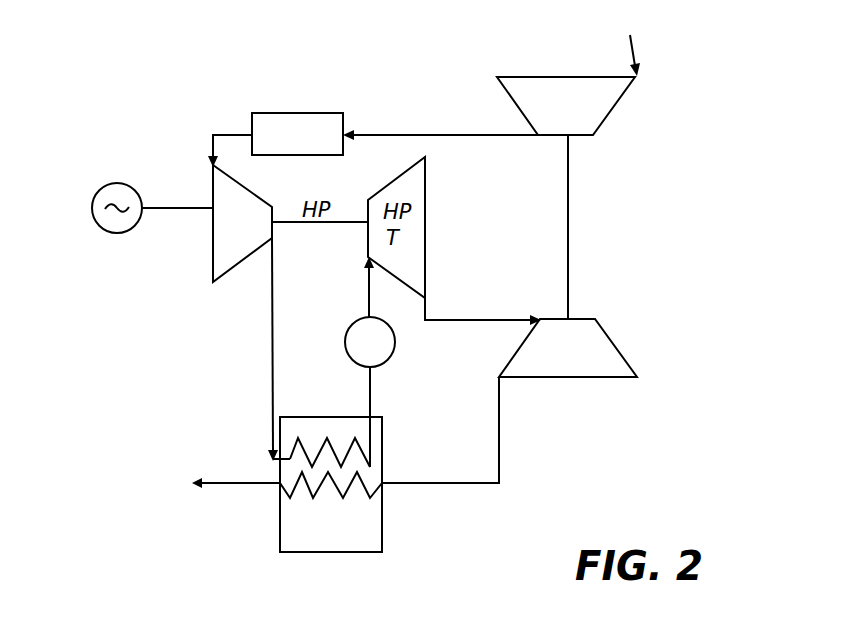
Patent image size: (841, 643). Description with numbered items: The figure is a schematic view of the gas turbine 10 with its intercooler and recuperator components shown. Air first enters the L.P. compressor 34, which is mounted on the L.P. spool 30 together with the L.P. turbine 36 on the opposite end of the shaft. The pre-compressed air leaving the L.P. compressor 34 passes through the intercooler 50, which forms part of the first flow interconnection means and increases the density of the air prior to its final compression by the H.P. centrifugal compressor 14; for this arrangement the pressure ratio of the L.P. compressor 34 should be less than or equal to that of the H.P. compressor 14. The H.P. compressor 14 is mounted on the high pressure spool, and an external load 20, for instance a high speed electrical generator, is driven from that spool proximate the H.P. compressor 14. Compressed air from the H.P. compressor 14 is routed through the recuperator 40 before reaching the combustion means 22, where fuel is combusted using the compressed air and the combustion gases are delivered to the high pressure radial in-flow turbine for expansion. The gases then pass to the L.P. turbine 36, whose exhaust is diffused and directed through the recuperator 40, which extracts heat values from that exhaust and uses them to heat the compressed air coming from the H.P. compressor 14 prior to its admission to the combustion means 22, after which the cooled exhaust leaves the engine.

The gas turbine 10 is at (407, 87).
The single entry centrifugal compressor 14 is at (213, 282).
The load 20 is at (108, 185).
The combustion means 22 is at (394, 348).
The L.P. spool 30 is at (581, 185).
The L.P. compressor 34 is at (593, 76).
The L.P. turbine 36 is at (622, 350).
The recuperator means 40 is at (382, 533).
The intercooler 50 is at (328, 113).